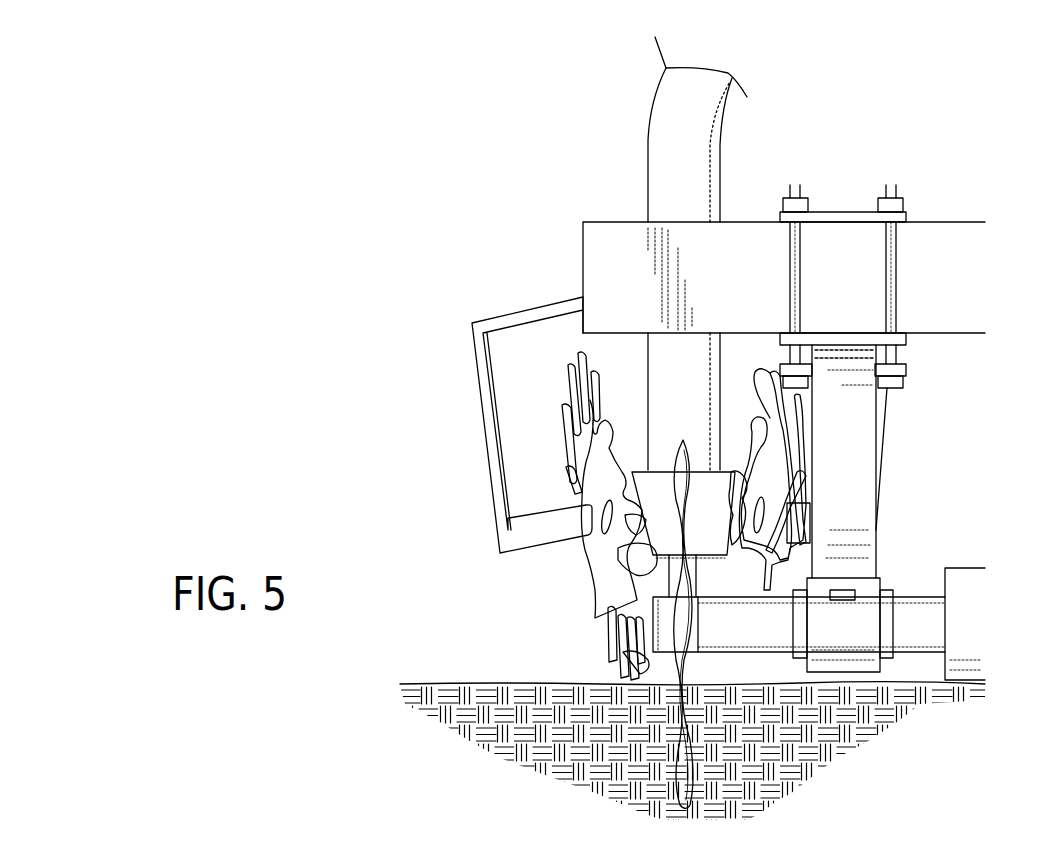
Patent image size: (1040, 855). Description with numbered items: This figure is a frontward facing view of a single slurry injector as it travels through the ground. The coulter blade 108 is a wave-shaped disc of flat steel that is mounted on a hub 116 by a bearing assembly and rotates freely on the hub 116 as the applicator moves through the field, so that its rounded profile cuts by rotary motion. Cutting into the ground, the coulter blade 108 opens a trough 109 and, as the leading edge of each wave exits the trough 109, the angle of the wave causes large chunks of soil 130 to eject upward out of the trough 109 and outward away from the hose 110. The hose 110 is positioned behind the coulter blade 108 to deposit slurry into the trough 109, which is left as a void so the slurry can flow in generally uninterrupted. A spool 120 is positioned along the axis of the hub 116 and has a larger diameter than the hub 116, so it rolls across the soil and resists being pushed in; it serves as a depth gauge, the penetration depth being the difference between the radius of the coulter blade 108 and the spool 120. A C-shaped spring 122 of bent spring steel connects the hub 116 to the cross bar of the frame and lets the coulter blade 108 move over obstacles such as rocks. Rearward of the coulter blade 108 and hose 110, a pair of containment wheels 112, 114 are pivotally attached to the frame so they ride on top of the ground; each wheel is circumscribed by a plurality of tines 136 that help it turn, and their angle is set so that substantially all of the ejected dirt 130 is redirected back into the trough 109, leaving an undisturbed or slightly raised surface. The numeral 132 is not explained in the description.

The coulter blade 108 is at (672, 712).
The trough 109 is at (700, 803).
The hose 110 is at (648, 165).
The containment wheel 112 is at (568, 388).
The containment wheel 114 is at (800, 428).
The hub 116 is at (925, 590).
The spool 120 is at (965, 568).
The C-shaped spring 122 is at (845, 467).
The chunks of soil 130 is at (617, 558).
The cutting tines 132 is at (640, 580).
The tines 136 is at (570, 470).